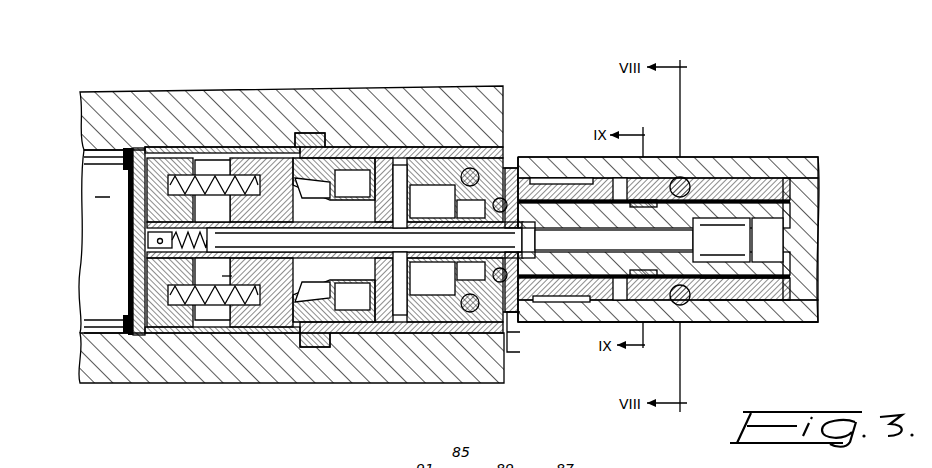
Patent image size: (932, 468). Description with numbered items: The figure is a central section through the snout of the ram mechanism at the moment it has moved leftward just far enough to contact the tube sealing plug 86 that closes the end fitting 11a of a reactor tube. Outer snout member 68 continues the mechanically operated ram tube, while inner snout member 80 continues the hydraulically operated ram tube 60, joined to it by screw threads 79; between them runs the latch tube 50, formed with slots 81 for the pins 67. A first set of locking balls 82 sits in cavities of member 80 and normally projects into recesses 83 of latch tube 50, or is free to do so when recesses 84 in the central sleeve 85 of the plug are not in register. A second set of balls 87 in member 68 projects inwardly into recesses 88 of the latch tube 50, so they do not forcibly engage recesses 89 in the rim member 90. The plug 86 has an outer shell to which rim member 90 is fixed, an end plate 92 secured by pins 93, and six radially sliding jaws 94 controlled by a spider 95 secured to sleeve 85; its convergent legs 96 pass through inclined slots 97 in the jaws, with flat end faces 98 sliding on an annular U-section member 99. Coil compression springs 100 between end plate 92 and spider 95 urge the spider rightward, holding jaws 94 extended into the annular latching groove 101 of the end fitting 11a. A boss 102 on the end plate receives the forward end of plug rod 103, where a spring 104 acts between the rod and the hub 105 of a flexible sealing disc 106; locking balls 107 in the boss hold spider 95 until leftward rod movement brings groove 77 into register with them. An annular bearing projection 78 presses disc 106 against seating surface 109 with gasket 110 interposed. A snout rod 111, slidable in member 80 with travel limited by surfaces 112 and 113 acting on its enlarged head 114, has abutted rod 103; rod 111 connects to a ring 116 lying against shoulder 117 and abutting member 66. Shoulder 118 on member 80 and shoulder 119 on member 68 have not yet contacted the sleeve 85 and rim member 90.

The end fitting 11a is at (448, 102).
The latch tube 50 is at (560, 300).
The hydraulically operated ram tube 60 is at (800, 262).
The member 66 is at (730, 290).
The pins 67 is at (690, 187).
The outer snout member 68 is at (517, 312).
The groove 77 is at (262, 222).
The annular bearing projection 78 is at (158, 337).
The screw threads 79 is at (745, 305).
The inner snout member 80 is at (592, 276).
The slots 81 is at (712, 300).
The first set of locking balls 82 is at (548, 192).
The recesses 83 is at (517, 185).
The recesses 84 is at (432, 201).
The central sleeve 85 is at (432, 278).
The tube sealing plug 86 is at (355, 375).
The second set of locking balls 87 is at (478, 310).
The recesses 88 is at (515, 320).
The recesses 89 is at (452, 305).
The rim member 90 is at (420, 320).
The end plate 92 is at (138, 275).
The pins 93 is at (187, 333).
The jaws 94 is at (305, 147).
The spider 95 is at (235, 176).
The legs 96 is at (380, 177).
The inclined slot 97 is at (360, 187).
The flat end faces 98 is at (378, 150).
The annular member 99 is at (398, 160).
The coil compression springs 100 is at (200, 178).
The annular latching groove 101 is at (320, 352).
The boss 102 is at (212, 191).
The plug rod 103 is at (371, 240).
The coil compression spring 104 is at (150, 262).
The hub 105 is at (128, 237).
The flexible sealing disc 106 is at (133, 290).
The locking balls 107 is at (213, 289).
The annular seating surface 109 is at (125, 163).
The annular gasket 110 is at (125, 320).
The snout rod 111 is at (614, 240).
The surface 112 is at (728, 235).
The surface 113 is at (768, 218).
The enlarged head 114 is at (770, 240).
The ring 116 is at (635, 200).
The shoulder 117 is at (618, 200).
The shoulder 118 is at (562, 183).
The shoulder 119 is at (513, 168).